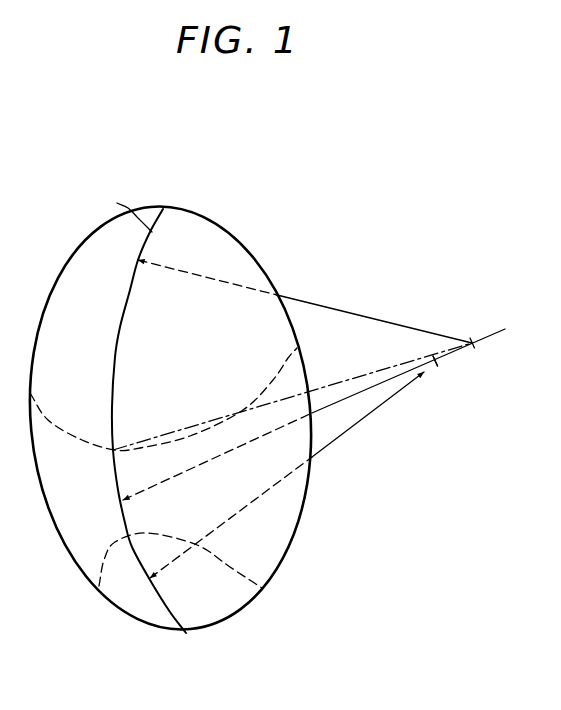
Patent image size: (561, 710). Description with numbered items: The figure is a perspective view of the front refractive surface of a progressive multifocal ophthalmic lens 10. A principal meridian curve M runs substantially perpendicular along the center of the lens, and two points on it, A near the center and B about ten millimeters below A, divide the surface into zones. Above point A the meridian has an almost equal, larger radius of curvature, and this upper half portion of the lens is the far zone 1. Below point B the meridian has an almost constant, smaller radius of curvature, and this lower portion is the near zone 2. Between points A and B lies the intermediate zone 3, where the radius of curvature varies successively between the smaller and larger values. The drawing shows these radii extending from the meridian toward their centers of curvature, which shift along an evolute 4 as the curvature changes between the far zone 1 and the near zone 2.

The progressive multifocal ophthalmic lens 10 is at (238, 211).
The far zone 1 is at (233, 256).
The near zone 2 is at (218, 608).
The intermediate zone 3 is at (270, 538).
The evolute 4 is at (437, 363).